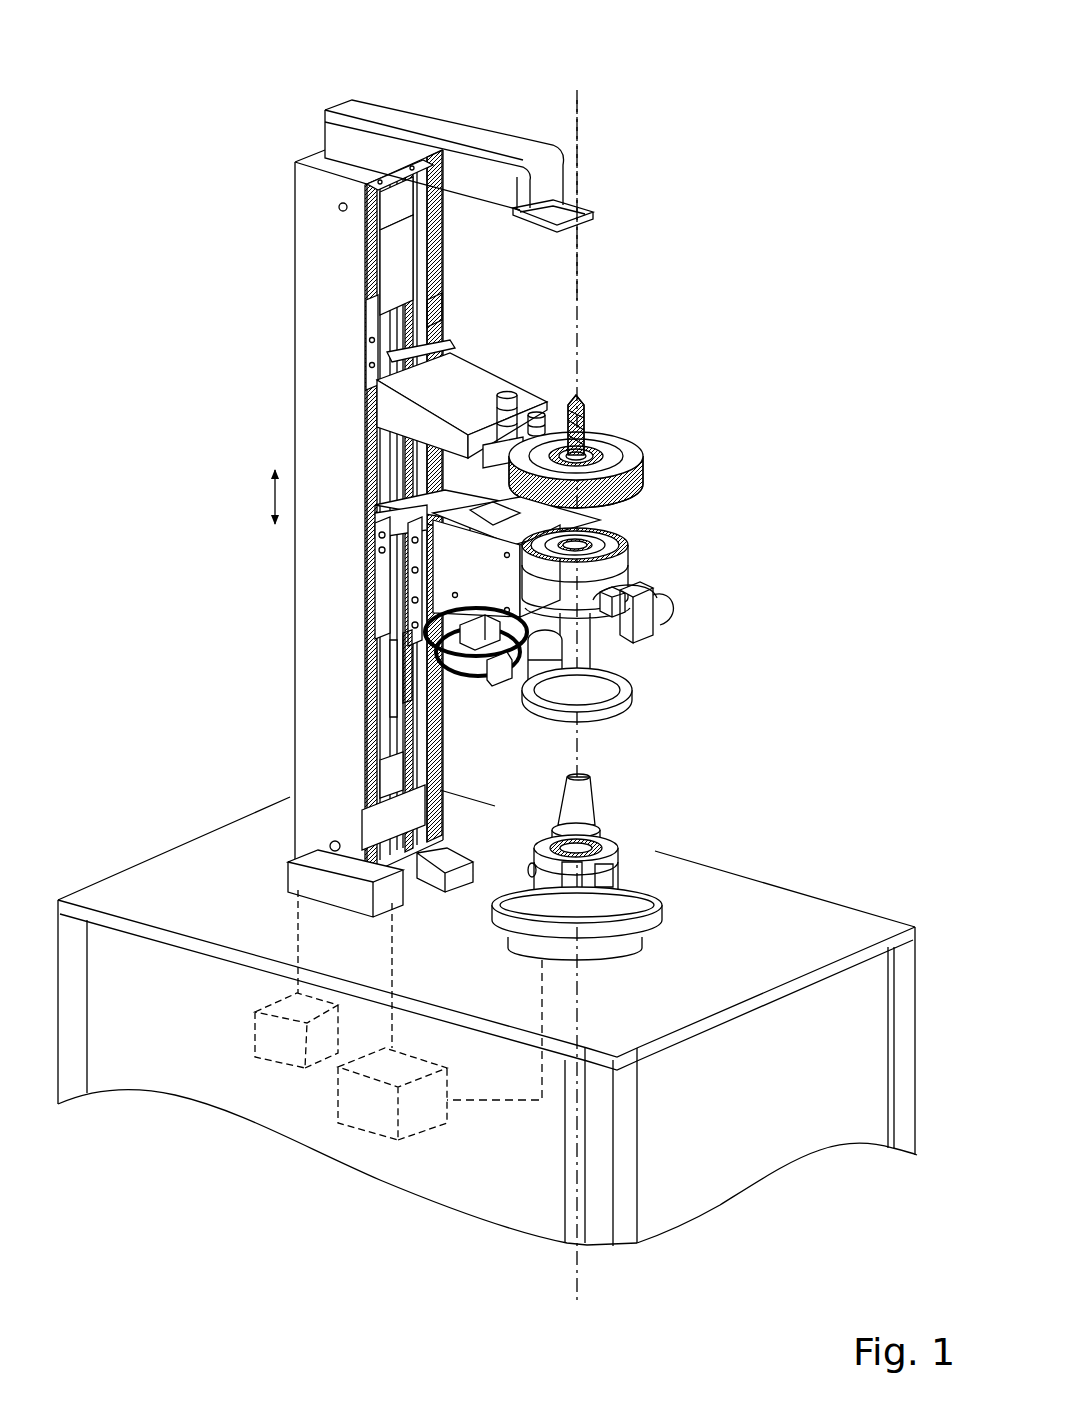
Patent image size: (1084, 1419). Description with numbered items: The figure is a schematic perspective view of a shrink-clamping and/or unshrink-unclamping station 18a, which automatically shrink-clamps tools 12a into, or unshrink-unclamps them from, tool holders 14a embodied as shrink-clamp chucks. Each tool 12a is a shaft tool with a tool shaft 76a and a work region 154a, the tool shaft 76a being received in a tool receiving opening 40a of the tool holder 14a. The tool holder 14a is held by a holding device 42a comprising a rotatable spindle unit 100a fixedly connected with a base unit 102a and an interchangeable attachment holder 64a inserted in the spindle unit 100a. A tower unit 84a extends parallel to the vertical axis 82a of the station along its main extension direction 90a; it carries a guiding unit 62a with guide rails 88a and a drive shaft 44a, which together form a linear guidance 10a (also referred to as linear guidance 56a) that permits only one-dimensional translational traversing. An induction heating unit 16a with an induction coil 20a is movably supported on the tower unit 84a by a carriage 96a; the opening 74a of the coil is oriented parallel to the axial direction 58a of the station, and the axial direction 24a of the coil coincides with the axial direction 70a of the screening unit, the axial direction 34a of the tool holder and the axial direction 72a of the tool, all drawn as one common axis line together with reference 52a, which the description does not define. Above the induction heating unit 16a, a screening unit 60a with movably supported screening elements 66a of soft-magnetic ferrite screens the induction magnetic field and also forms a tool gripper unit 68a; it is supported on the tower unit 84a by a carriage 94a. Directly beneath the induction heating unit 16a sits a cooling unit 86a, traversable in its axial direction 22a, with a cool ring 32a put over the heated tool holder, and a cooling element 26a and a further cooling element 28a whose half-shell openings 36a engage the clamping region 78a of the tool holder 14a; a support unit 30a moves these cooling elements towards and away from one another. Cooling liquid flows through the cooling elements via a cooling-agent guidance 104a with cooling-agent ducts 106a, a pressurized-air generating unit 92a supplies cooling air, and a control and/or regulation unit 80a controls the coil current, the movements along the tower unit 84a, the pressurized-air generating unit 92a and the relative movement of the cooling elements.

The linear guidance 10a is at (269, 519).
The tool 12a is at (588, 535).
The tool holder 14a is at (640, 778).
The induction heating unit 16a is at (662, 595).
The shrink-clamping and/or unshrink-unclamping station 18a is at (273, 182).
The induction coil 20a is at (648, 537).
The axial direction of the cooling unit 22a is at (687, 652).
The axial direction of the induction coil 24a is at (718, 200).
The cooling element 26a is at (592, 642).
The further cooling element 28a is at (560, 675).
The support unit 30a is at (483, 683).
The cool ring 32a is at (612, 630).
The axial direction of a tool holder 34a is at (687, 652).
The half-shell opening 36a is at (638, 670).
The tool receiving opening 40a is at (583, 803).
The holding device 42a is at (605, 870).
The drive shaft 44a is at (390, 270).
The pivot axis 52a is at (718, 200).
The linear guidance 56a is at (269, 519).
The axial direction of the station 58a is at (687, 652).
The screening unit 60a is at (654, 427).
The guiding unit 62a is at (363, 312).
The attachment holder 64a is at (719, 827).
The screening elements 66a is at (640, 445).
The tool gripper unit 68a is at (385, 530).
The axial direction of the screening unit 70a is at (687, 652).
The axial direction of a tool 72a is at (577, 100).
The opening of the induction coil 74a is at (600, 505).
The tool shaft 76a is at (400, 466).
The clamping region 78a is at (719, 827).
The control and/or regulation unit 80a is at (370, 1100).
The vertical axis 82a is at (578, 146).
The tower unit 84a is at (308, 138).
The cooling unit 86a is at (600, 665).
The guide rail 88a is at (440, 306).
The main extension direction 90a is at (275, 497).
The pressurized-air generating unit 92a is at (280, 1037).
The carriage of the screening unit 94a is at (395, 430).
The carriage of the induction heating unit 96a is at (385, 615).
The spindle unit 100a is at (627, 907).
The base unit 102a is at (77, 1058).
The cooling-agent guidance 104a is at (375, 665).
The cooling-agent ducts 106a is at (375, 703).
The work region 154a is at (597, 410).